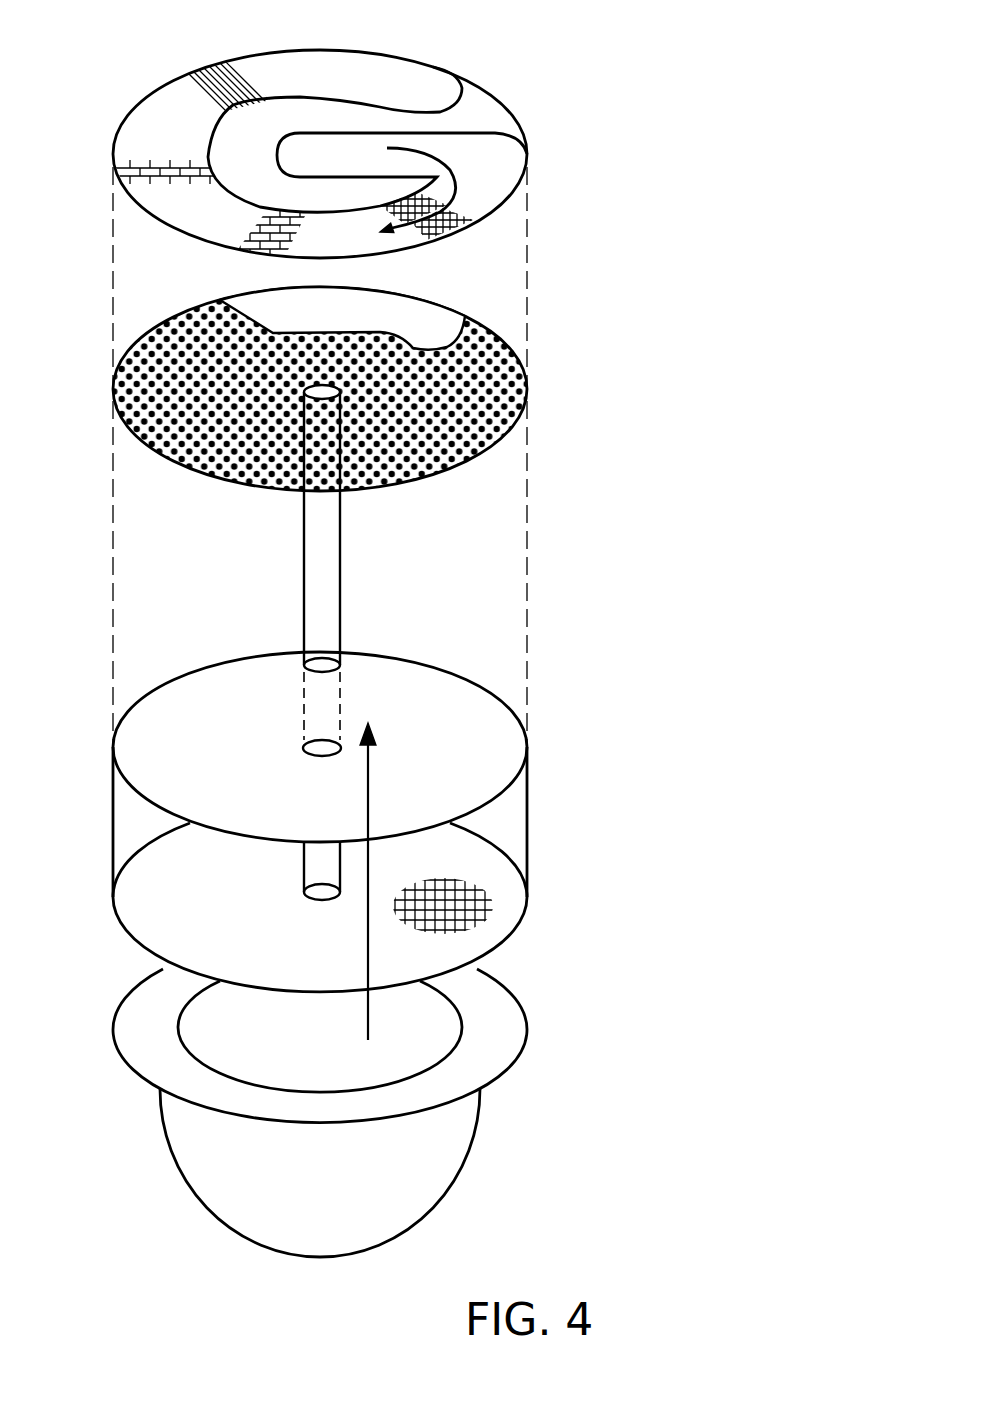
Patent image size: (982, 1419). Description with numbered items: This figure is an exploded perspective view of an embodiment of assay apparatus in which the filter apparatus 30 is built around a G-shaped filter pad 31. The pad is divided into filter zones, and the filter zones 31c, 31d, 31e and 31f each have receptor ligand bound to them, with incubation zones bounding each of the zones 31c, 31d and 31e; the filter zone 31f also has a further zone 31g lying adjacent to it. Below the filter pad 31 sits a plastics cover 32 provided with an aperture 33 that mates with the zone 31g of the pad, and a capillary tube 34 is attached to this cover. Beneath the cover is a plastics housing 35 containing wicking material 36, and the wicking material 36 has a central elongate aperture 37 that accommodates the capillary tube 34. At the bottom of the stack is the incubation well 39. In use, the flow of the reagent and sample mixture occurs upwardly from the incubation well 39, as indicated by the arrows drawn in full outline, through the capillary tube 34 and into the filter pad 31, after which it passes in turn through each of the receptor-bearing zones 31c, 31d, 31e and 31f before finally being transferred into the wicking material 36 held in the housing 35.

The filter apparatus 30 is at (595, 609).
The G-shaped filter pad 31 is at (600, 69).
The filter zone 31c is at (447, 220).
The filter zone 31d is at (254, 247).
The filter zone 31e is at (120, 190).
The filter zone 31f is at (196, 80).
The zone 31g is at (395, 92).
The plastics cover 32 is at (485, 386).
The aperture 33 is at (410, 318).
The capillary tube 34 is at (328, 561).
The plastics housing 35 is at (527, 797).
The wicking material 36 is at (453, 905).
The central elongate aperture 37 is at (320, 863).
The incubation well 39 is at (447, 1154).